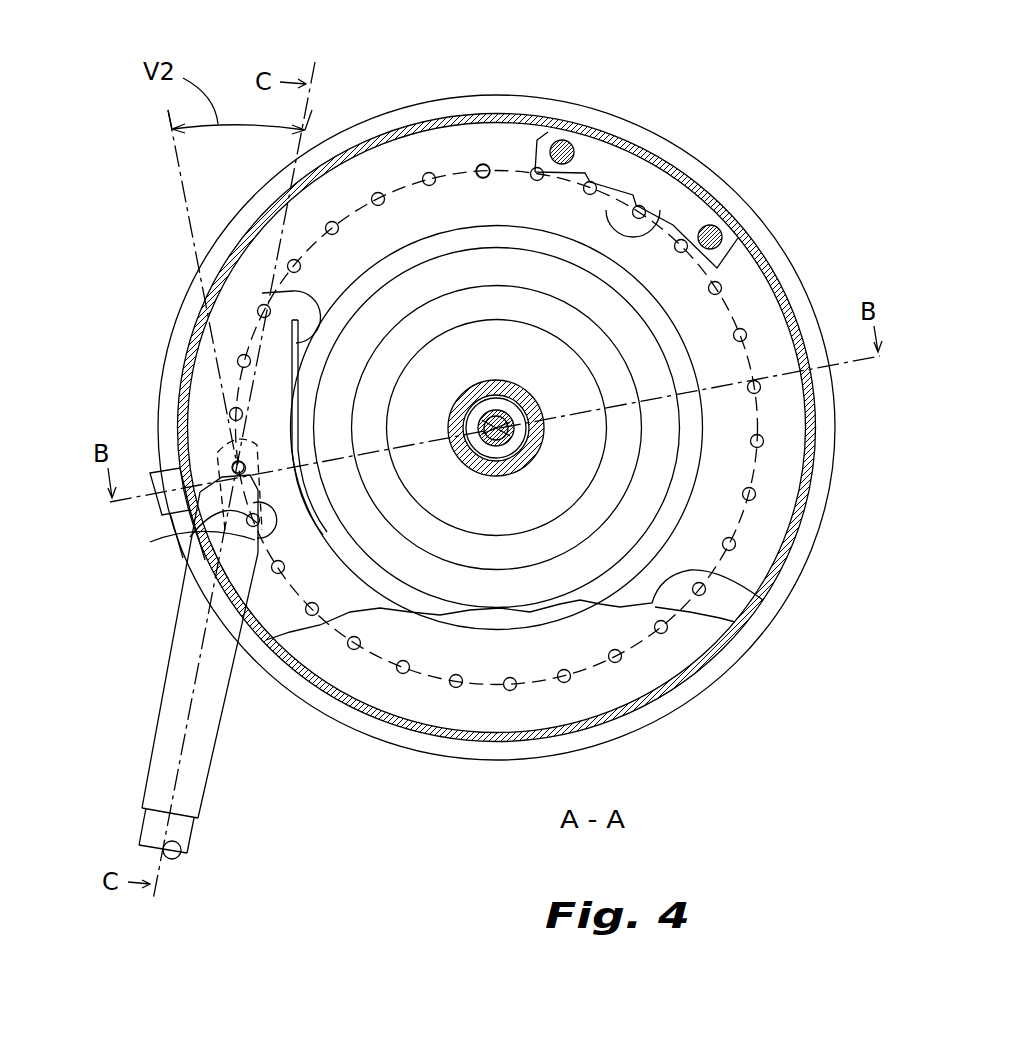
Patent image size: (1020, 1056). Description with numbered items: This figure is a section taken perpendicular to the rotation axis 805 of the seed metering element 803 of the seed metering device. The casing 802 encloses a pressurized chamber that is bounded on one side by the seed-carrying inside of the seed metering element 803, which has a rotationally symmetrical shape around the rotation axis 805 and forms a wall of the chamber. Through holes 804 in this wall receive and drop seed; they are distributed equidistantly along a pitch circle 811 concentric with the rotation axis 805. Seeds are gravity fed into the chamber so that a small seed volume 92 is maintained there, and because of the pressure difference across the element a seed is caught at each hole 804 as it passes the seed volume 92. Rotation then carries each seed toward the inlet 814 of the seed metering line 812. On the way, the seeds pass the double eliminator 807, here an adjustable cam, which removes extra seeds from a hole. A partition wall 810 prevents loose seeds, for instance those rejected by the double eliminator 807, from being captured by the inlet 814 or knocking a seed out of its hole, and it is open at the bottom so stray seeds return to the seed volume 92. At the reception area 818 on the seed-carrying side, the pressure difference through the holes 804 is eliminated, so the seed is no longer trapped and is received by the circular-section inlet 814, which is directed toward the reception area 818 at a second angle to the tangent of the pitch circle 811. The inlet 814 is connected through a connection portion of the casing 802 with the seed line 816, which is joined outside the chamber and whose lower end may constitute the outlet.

The seed volume 92 is at (765, 603).
The casing 802 is at (615, 135).
The seed metering element 803 is at (752, 479).
The through holes 804 is at (486, 165).
The rotation axis 805 is at (470, 412).
The double eliminator 807 is at (662, 228).
The partition wall 810 is at (262, 293).
The pitch circle 811 is at (405, 187).
The seed metering line 812 is at (210, 770).
The inlet 814 is at (195, 536).
The seed line 816 is at (195, 835).
The reception area 818 is at (235, 440).